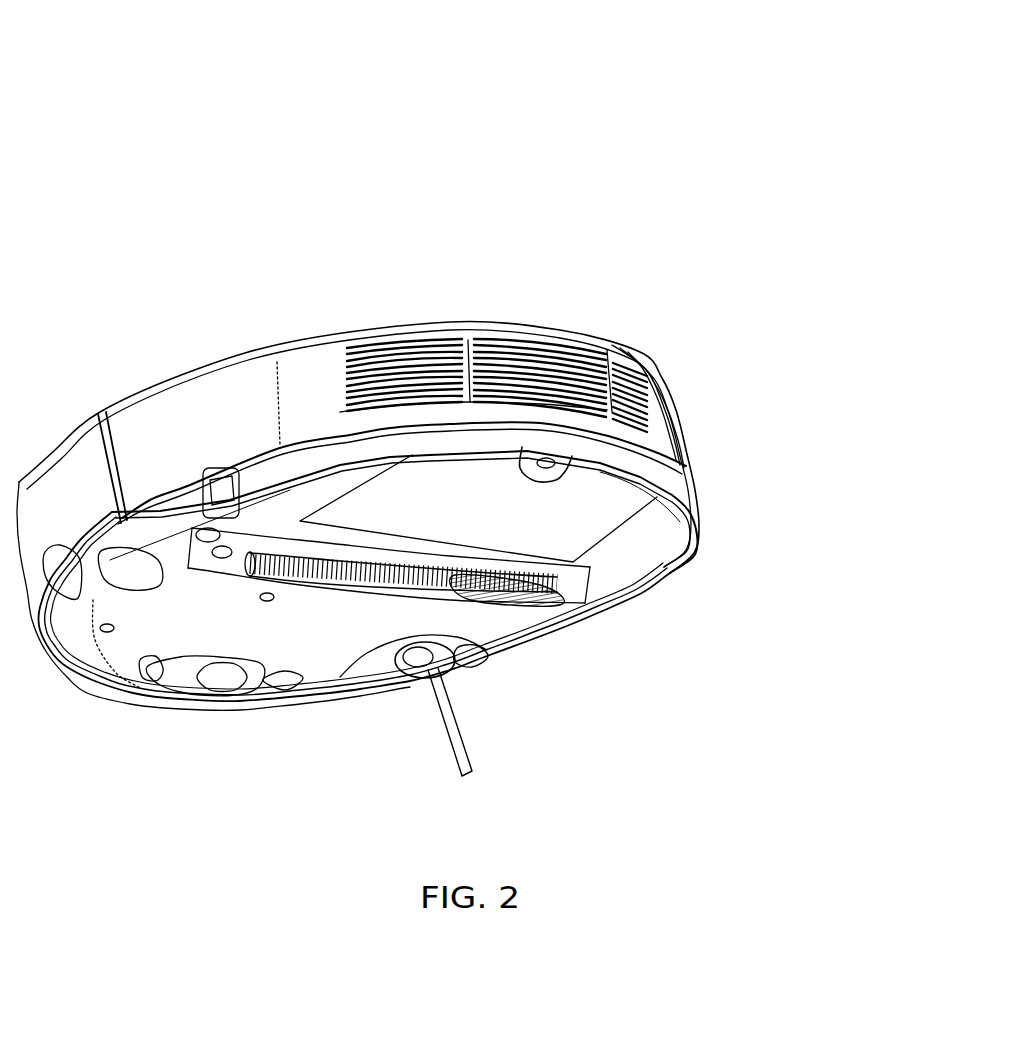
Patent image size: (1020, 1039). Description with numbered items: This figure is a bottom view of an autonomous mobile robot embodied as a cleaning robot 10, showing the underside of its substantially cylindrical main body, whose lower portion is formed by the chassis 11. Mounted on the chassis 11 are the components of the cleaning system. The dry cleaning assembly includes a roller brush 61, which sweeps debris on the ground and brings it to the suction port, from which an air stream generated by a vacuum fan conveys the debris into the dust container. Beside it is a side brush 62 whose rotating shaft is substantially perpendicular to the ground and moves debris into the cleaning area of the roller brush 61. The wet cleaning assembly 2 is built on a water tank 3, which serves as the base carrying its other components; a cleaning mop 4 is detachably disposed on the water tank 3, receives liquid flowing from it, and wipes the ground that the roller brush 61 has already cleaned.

The cleaning robot 10 is at (360, 90).
The chassis 11 is at (176, 632).
The wet cleaning assembly 2 is at (706, 525).
The water tank 3 is at (660, 466).
The cleaning mop 4 is at (650, 550).
The roller brush 61 is at (478, 607).
The side brush 62 is at (422, 722).